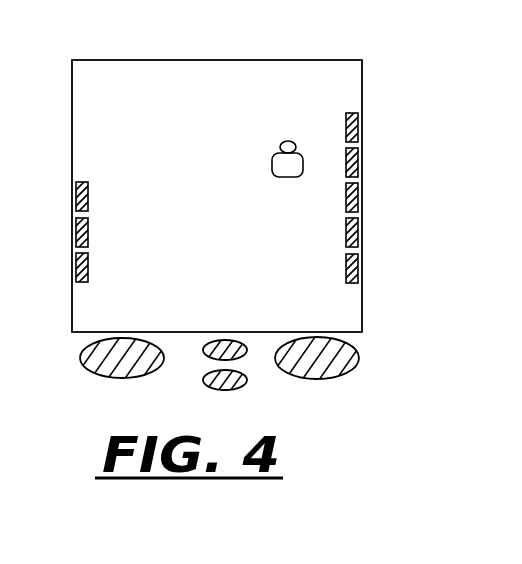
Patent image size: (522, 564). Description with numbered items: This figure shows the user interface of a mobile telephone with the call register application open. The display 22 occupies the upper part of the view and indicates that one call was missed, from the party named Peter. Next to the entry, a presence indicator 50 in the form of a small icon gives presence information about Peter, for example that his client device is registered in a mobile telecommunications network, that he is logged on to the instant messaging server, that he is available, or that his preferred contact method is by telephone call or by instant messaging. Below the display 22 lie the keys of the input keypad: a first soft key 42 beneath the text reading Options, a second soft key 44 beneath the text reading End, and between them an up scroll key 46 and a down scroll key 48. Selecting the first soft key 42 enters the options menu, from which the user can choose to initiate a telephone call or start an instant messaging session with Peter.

The display 22 is at (310, 72).
The first soft key button 42 is at (82, 365).
The second soft key button 44 is at (343, 362).
The up scroll key 46 is at (206, 358).
The down scroll key 48 is at (233, 377).
The presence indicator 50 is at (303, 142).